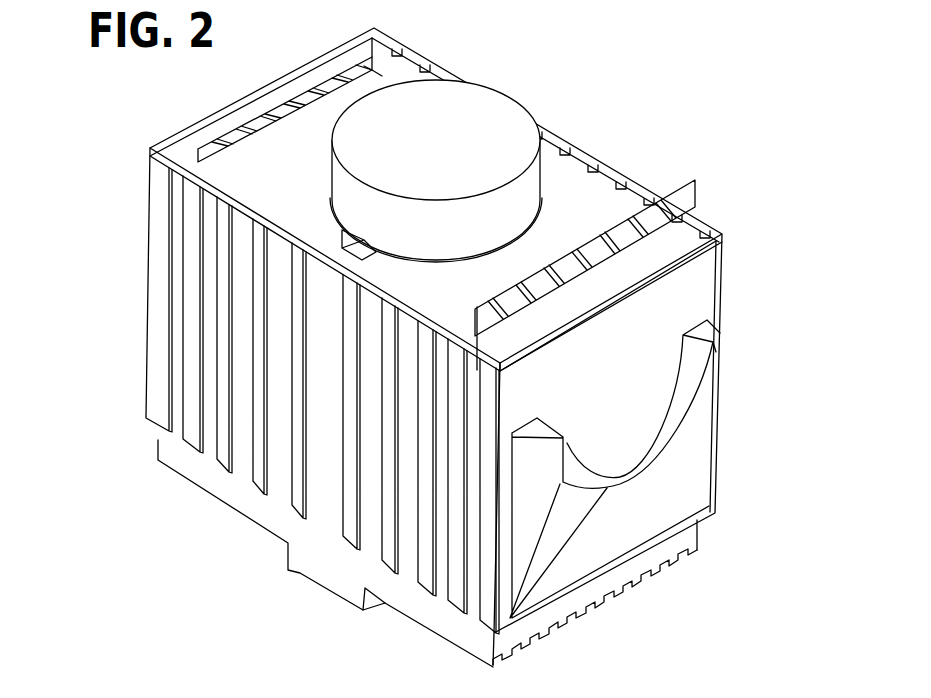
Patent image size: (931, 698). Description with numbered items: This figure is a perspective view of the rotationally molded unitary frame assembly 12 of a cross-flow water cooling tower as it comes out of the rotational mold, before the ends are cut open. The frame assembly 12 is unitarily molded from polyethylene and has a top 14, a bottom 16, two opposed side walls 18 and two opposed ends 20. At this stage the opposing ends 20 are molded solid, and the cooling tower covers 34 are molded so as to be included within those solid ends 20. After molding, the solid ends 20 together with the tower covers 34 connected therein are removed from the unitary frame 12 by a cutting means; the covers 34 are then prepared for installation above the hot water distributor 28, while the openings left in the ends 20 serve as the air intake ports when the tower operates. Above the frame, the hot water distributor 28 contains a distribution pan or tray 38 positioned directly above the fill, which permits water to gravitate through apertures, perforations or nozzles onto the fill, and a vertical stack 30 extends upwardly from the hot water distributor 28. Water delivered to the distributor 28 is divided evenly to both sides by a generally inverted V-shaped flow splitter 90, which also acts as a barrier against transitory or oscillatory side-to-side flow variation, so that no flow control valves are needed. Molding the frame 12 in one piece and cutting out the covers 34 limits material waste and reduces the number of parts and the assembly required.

The frame assembly 12 is at (641, 111).
The top 14 is at (352, 36).
The bottom 16 is at (394, 606).
The side walls 18 is at (342, 389).
The opposed ends 20 is at (131, 282).
The hot water distributor 28 is at (657, 245).
The vertical stack 30 is at (543, 178).
The tower covers 34 is at (676, 458).
The distribution pan or tray 38 is at (552, 303).
The flow splitter 90 is at (200, 173).